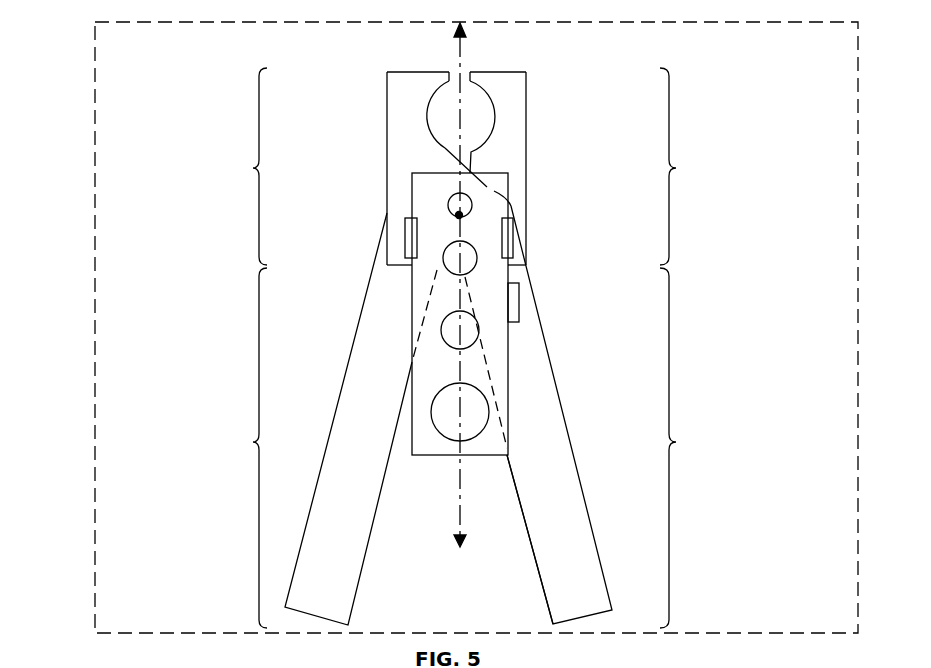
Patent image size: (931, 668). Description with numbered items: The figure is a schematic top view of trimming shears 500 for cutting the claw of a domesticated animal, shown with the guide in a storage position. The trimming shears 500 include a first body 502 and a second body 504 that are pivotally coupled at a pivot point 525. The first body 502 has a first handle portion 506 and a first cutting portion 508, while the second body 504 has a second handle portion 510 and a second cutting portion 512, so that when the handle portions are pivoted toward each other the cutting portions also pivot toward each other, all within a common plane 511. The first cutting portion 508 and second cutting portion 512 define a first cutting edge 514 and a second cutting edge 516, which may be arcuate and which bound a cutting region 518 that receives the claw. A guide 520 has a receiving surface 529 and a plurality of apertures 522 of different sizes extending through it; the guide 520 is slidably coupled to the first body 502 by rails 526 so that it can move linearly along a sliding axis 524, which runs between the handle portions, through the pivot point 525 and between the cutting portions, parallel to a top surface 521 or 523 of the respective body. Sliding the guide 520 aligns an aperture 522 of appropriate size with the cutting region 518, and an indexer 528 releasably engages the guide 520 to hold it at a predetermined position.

The trimming shears 500 is at (195, 83).
The first body 502 is at (597, 166).
The second body 504 is at (345, 162).
The first handle portion 506 is at (676, 442).
The first cutting portion 508 is at (676, 168).
The second handle portion 510 is at (253, 442).
The common plane 511 is at (95, 228).
The second cutting portion 512 is at (253, 168).
The first cutting edge 514 is at (497, 112).
The second cutting edge 516 is at (422, 113).
The cutting region 518 is at (473, 92).
The guide 520 is at (420, 458).
The top surface 521 is at (528, 259).
The apertures 522 is at (480, 435).
The top surface 523 is at (366, 283).
The sliding axis 524 is at (458, 53).
The pivot point 525 is at (459, 215).
The rails 526 is at (405, 226).
The indexer 528 is at (518, 296).
The receiving surface 529 is at (497, 344).